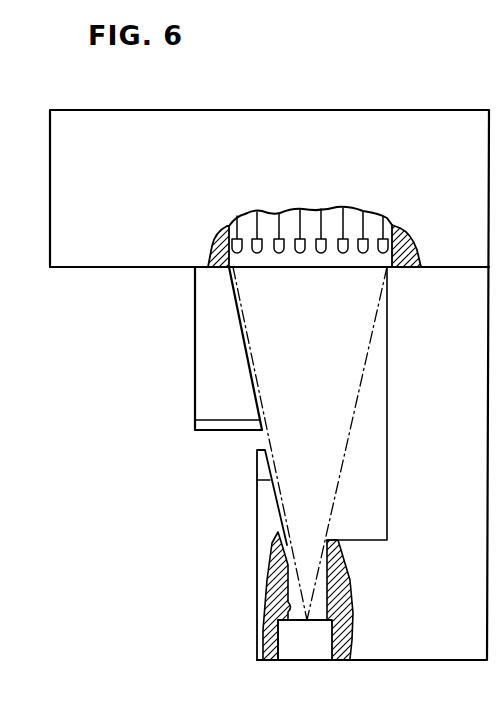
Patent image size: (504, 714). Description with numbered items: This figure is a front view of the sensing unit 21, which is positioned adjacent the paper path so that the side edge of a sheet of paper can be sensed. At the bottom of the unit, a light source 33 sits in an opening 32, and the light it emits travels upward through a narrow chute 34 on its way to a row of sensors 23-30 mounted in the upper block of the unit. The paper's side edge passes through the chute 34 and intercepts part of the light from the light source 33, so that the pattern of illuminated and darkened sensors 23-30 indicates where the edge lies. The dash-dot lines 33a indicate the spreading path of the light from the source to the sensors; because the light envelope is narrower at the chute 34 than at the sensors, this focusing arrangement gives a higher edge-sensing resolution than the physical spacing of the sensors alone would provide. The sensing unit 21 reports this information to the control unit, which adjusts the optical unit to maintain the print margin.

The sensing unit 21 is at (299, 120).
The sensor 23 is at (212, 240).
The sensor 30 is at (410, 237).
The opening 32 is at (291, 607).
The light source 33 is at (312, 648).
The beam axis 33a is at (343, 456).
The chute 34 is at (259, 441).